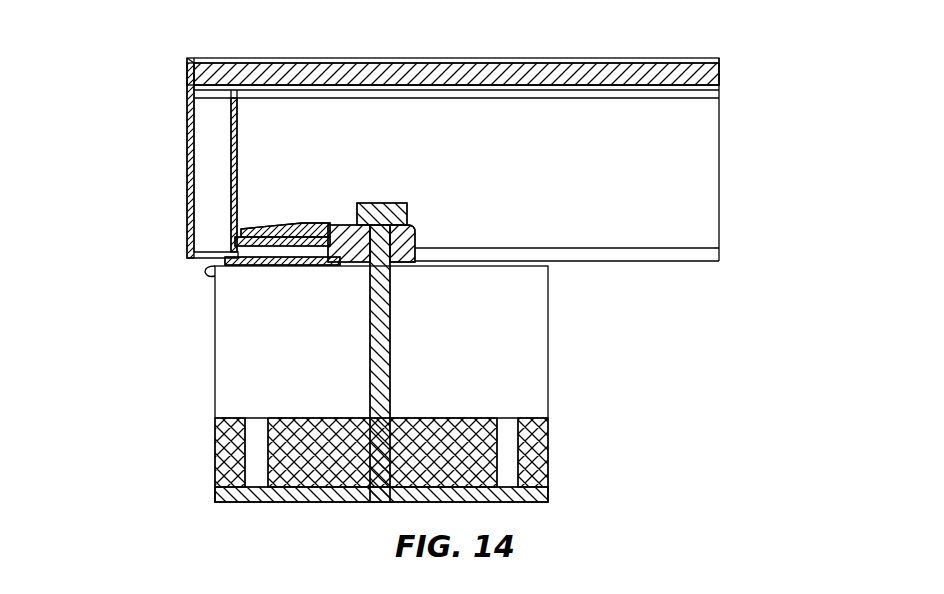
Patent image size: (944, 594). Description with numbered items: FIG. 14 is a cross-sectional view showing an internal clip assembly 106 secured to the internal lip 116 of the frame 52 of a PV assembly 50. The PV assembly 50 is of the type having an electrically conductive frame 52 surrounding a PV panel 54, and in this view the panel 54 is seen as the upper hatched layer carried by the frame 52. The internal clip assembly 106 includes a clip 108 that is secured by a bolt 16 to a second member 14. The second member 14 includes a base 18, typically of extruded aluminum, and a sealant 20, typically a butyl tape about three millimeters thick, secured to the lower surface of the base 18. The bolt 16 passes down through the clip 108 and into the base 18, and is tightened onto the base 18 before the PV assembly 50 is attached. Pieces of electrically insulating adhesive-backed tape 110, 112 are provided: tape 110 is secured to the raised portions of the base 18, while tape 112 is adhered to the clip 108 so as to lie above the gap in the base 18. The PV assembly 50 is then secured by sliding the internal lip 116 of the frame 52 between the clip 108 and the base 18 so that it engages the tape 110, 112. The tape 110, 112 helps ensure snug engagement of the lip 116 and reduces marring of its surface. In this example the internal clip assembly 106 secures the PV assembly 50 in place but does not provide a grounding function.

The PV assembly 50 is at (645, 57).
The frame 52 is at (187, 108).
The PV panel 54 is at (695, 78).
The internal clip assembly 106 is at (555, 183).
The clip 108 is at (415, 235).
The electrically insulating adhesive-backed tape 110 is at (206, 267).
The electrically insulating adhesive-backed tape 112 is at (268, 225).
The internal lip 116 is at (342, 262).
The second member 14 is at (585, 380).
The bolt 16 is at (390, 345).
The base 18 is at (548, 436).
The sealant 20 is at (548, 490).